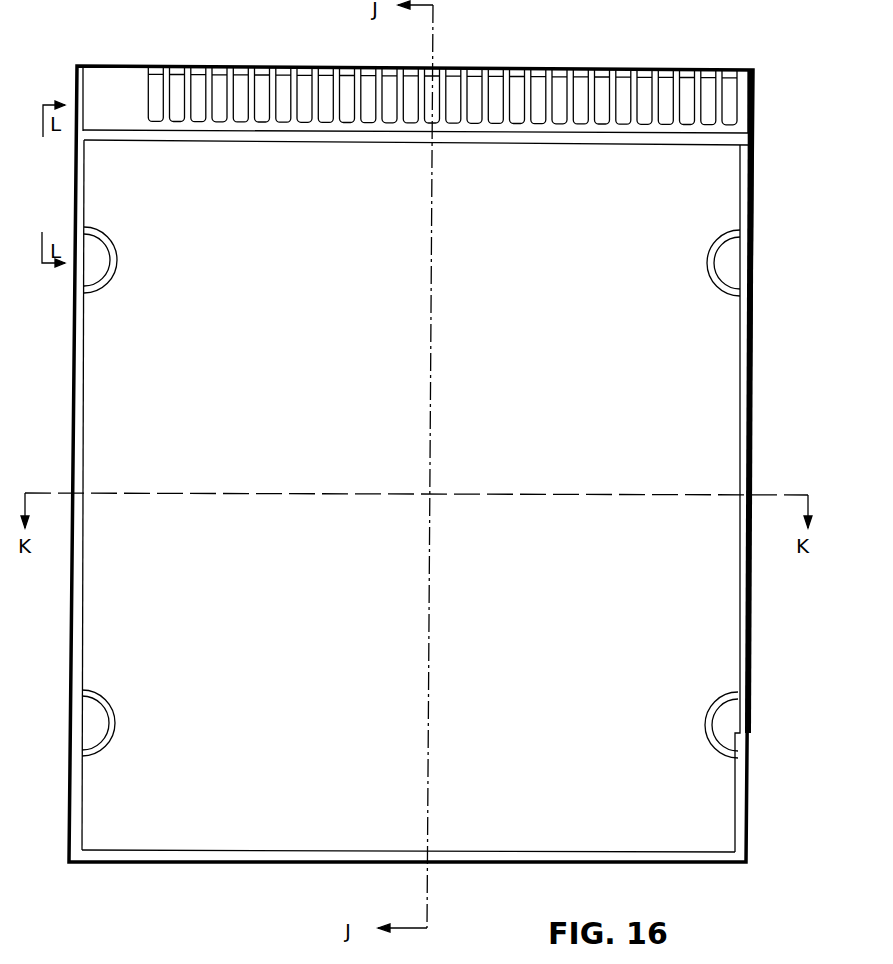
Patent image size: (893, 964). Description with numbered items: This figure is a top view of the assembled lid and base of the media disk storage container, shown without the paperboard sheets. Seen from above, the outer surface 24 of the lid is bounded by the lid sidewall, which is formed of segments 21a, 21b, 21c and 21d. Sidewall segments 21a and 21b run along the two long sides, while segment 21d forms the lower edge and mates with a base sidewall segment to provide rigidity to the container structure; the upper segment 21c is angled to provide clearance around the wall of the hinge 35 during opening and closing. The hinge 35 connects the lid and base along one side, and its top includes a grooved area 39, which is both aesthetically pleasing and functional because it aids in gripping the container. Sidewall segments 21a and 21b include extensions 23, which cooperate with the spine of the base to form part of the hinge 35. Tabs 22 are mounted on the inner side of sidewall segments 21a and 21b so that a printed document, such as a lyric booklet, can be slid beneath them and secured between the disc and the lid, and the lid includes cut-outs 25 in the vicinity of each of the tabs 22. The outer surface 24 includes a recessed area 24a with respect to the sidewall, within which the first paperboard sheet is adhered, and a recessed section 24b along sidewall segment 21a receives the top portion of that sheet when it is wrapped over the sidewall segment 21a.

The lid sidewall segment 21a is at (748, 795).
The lid sidewall segment 21b is at (72, 662).
The lid sidewall segment 21c is at (513, 145).
The lid sidewall segment 21d is at (235, 865).
The tab 22 is at (718, 268).
The extension 23 is at (757, 112).
The outer surface 24 is at (505, 350).
The recessed area 24a is at (287, 618).
The recessed section 24b is at (750, 575).
The cut-out 25 is at (706, 730).
The hinge 35 is at (522, 68).
The grooved area 39 is at (672, 93).